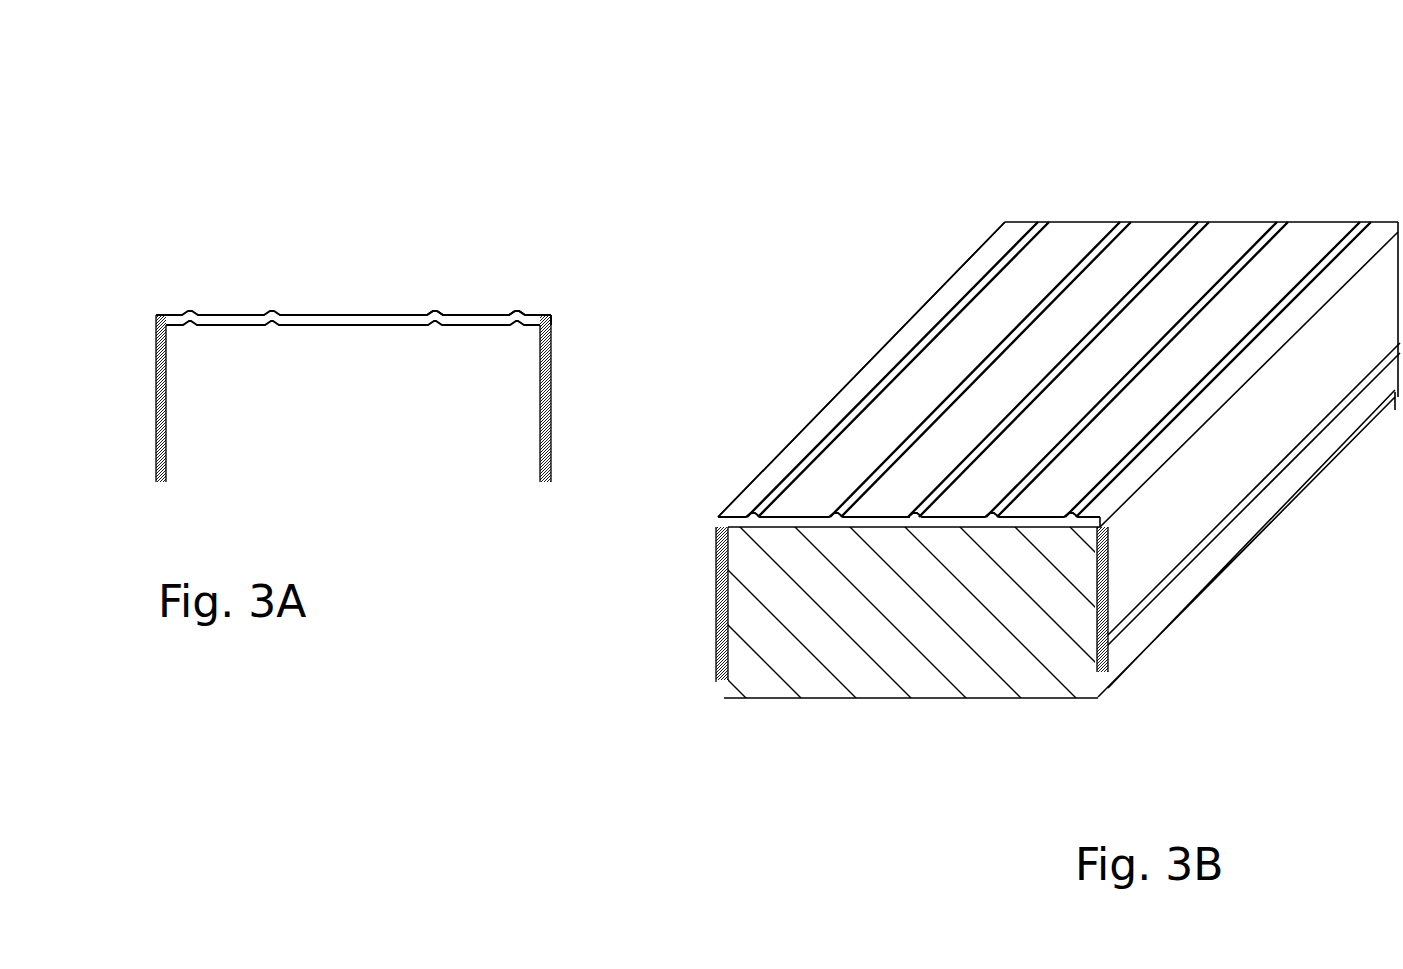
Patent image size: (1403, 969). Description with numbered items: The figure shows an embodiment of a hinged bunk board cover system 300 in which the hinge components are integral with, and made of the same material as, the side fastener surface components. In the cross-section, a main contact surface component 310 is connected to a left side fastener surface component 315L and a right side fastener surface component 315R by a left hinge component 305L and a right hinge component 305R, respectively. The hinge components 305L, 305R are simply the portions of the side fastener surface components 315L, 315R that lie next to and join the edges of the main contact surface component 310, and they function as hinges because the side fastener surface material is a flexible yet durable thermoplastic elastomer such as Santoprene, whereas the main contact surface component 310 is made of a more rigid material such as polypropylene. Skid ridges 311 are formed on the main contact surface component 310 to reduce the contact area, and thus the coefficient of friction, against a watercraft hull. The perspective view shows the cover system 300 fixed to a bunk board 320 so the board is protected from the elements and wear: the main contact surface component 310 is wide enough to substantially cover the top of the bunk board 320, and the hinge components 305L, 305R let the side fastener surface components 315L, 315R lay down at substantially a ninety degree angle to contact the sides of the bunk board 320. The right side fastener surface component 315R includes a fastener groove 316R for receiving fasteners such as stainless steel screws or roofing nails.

In FIG. 3A, the hinged bunk board cover system 300 is at (196, 71).
In FIG. 3A, the left hinge component 305L is at (166, 340).
In FIG. 3B, the left hinge component 305L is at (718, 528).
In FIG. 3A, the right hinge component 305R is at (552, 340).
In FIG. 3B, the right hinge component 305R is at (1153, 374).
In FIG. 3A, the main contact surface component 310 is at (392, 313).
In FIG. 3B, the main contact surface component 310 is at (1150, 237).
In FIG. 3A, the skid ridges 311 is at (431, 313).
In FIG. 3B, the skid ridges 311 is at (1122, 221).
In FIG. 3A, the left side fastener surface component 315L is at (166, 414).
In FIG. 3B, the left side fastener surface component 315L is at (716, 630).
In FIG. 3A, the right side fastener surface component 315R is at (540, 404).
In FIG. 3B, the right side fastener surface component 315R is at (1281, 394).
In FIG. 3B, the right fastener groove 316R is at (1224, 521).
In FIG. 3B, the bunk board 320 is at (922, 678).